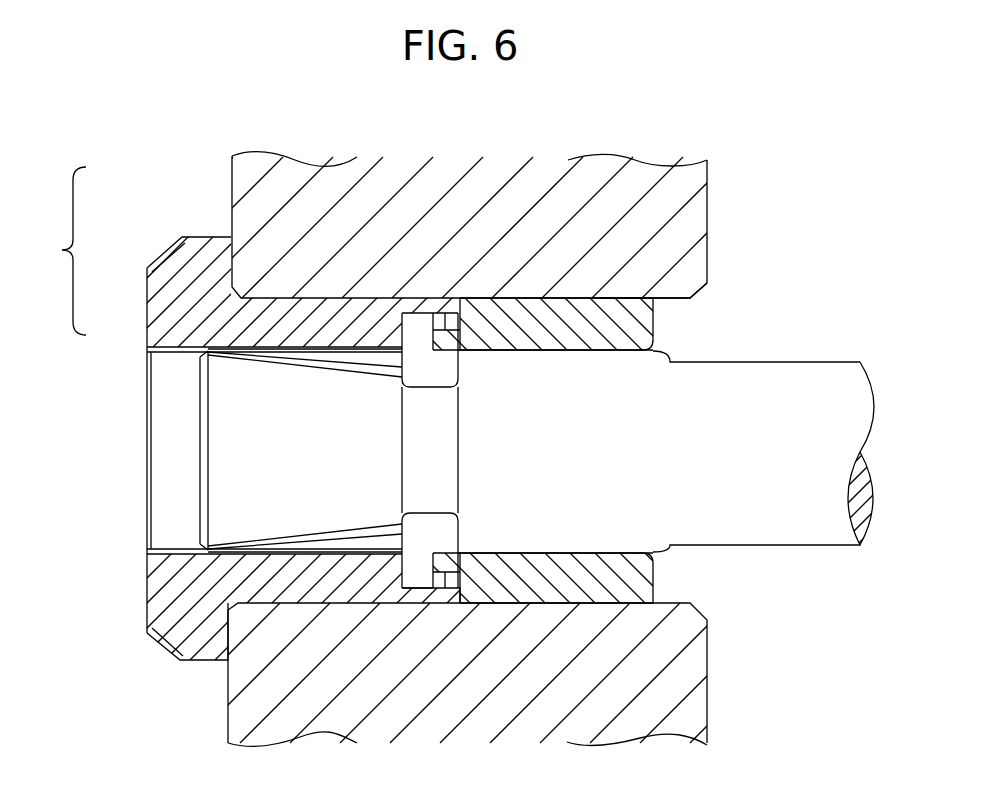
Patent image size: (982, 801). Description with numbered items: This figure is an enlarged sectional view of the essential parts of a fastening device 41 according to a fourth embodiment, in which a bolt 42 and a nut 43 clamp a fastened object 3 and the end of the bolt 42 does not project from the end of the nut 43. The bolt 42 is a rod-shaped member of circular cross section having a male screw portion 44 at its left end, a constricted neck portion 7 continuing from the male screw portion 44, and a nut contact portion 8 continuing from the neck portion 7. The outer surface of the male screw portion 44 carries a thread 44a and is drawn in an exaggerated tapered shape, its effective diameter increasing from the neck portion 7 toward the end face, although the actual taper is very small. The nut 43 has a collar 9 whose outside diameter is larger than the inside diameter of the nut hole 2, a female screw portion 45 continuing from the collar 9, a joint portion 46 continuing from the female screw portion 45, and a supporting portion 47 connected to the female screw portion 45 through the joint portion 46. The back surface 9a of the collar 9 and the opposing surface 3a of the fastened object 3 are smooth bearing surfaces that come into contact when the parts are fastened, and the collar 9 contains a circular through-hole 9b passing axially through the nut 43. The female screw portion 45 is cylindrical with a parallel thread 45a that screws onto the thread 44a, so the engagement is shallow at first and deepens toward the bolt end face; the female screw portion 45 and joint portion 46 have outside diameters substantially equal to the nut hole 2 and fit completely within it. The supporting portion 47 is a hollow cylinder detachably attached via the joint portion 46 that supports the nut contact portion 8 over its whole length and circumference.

The nut hole 2 is at (670, 303).
The fastened object 3 is at (247, 220).
The surface of the fastened object 3a is at (230, 613).
The neck portion 7 is at (415, 447).
The nut contact portion 8 is at (630, 452).
The collar 9 is at (165, 640).
The back surface of the collar 9a is at (243, 647).
The through-hole 9b is at (170, 463).
The fastening device 41 is at (56, 251).
The bolt 42 is at (198, 407).
The nut 43 is at (163, 287).
The male screw portion 44 is at (223, 438).
The thread of the male screw portion 44a is at (340, 367).
The female screw portion 45 is at (262, 348).
The thread of the female screw portion 45a is at (175, 548).
The joint portion 46 is at (417, 595).
The supporting portion 47 is at (630, 583).